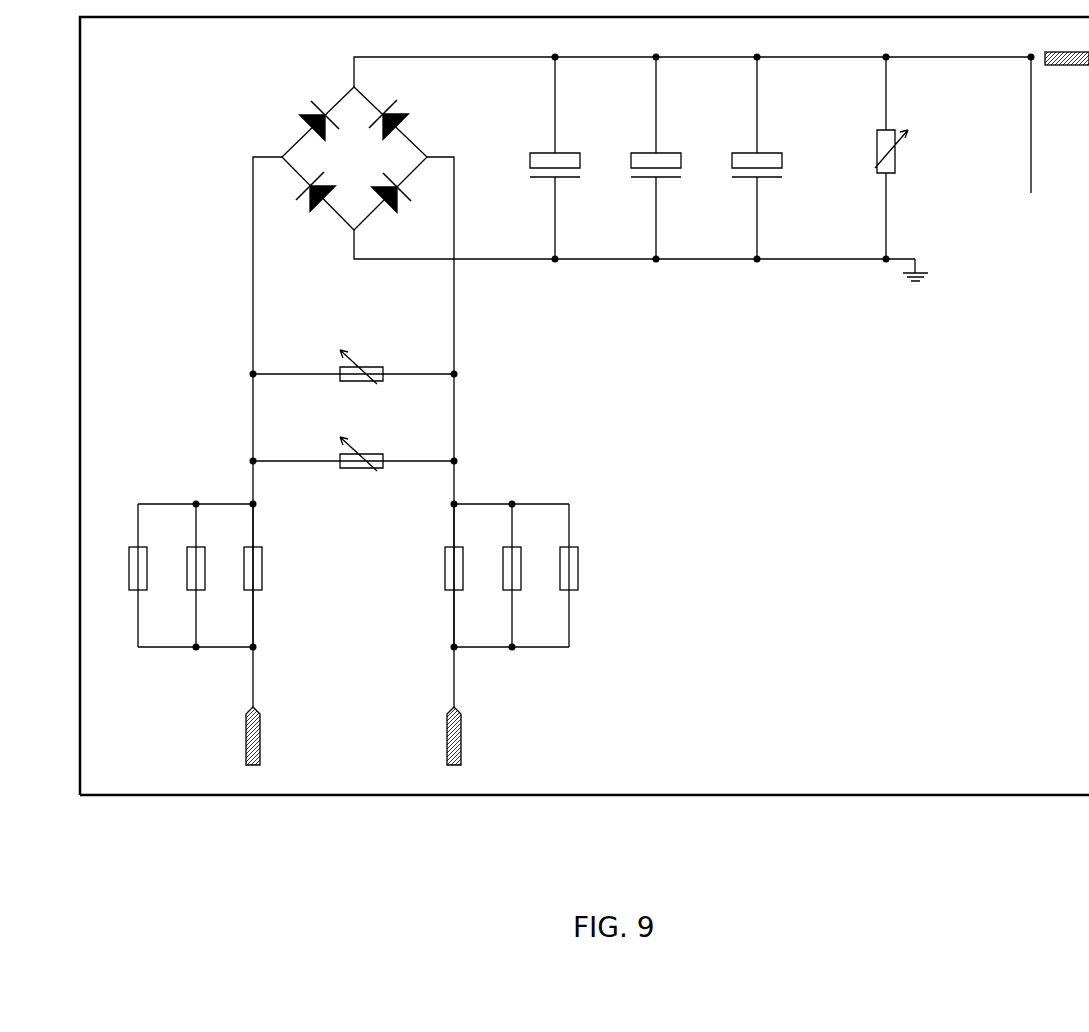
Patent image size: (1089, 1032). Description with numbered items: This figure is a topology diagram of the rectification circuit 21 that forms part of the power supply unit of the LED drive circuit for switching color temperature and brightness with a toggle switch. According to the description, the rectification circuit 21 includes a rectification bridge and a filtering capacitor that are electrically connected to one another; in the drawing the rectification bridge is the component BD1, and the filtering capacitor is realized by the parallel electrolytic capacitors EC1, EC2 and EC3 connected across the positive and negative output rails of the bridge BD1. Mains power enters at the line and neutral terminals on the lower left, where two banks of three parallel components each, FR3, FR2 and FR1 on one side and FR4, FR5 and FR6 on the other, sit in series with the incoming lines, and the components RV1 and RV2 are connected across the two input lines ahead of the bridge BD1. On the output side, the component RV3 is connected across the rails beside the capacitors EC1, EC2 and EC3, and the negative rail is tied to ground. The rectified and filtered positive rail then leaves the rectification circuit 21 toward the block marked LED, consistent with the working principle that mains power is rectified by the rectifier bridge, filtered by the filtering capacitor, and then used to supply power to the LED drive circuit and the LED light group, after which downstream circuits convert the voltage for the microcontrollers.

The rectification circuit 21 is at (584, 451).
The bridge rectifier BD1 is at (365, 161).
The electrolytic capacitor EC1 is at (576, 158).
The electrolytic capacitor EC2 is at (678, 158).
The electrolytic capacitor EC3 is at (785, 158).
The varistor RV1 is at (353, 379).
The varistor RV2 is at (353, 466).
The varistor RV3 is at (899, 158).
The fusible resistor FR1 is at (267, 575).
The fusible resistor FR2 is at (210, 575).
The fusible resistor FR3 is at (152, 575).
The fusible resistor FR4 is at (468, 575).
The fusible resistor FR5 is at (526, 575).
The fusible resistor FR6 is at (583, 575).
The LED load LED is at (1060, 122).